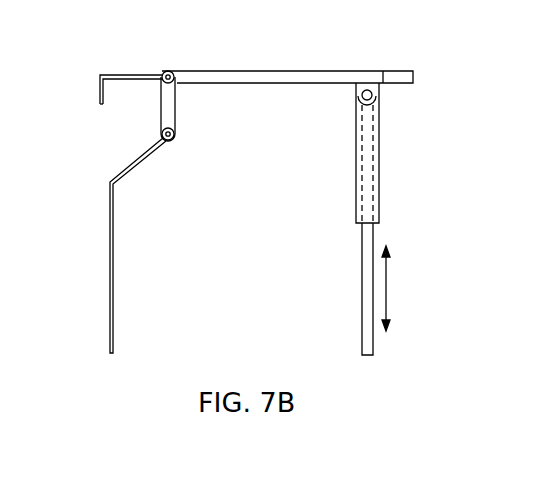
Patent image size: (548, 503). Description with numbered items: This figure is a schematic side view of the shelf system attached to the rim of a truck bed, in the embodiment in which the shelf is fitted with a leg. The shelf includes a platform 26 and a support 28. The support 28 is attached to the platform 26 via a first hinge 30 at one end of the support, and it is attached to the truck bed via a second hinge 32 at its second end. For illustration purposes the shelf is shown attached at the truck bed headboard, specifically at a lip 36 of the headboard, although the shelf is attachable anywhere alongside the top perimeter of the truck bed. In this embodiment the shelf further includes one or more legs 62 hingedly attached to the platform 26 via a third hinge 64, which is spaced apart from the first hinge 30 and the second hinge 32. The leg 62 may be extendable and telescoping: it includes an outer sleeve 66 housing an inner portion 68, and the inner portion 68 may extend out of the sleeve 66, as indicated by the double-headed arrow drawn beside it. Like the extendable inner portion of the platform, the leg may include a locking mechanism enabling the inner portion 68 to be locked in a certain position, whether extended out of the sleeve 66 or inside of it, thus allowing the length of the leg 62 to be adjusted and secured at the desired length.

The platform 26 is at (290, 70).
The support 28 is at (178, 103).
The first hinge 30 is at (166, 70).
The second hinge 32 is at (168, 141).
The lip 36 is at (115, 88).
The leg 62 is at (379, 160).
The third hinge 64 is at (372, 96).
The outer sleeve 66 is at (362, 175).
The inner portion 68 is at (362, 270).